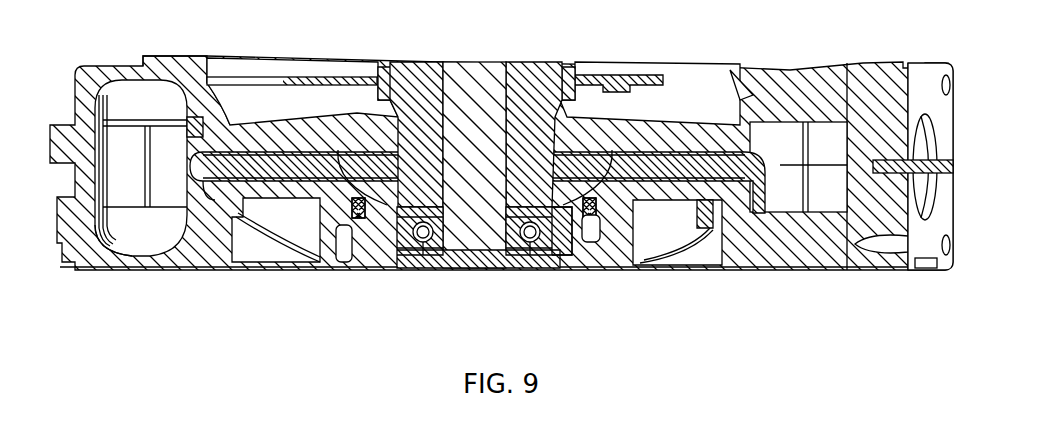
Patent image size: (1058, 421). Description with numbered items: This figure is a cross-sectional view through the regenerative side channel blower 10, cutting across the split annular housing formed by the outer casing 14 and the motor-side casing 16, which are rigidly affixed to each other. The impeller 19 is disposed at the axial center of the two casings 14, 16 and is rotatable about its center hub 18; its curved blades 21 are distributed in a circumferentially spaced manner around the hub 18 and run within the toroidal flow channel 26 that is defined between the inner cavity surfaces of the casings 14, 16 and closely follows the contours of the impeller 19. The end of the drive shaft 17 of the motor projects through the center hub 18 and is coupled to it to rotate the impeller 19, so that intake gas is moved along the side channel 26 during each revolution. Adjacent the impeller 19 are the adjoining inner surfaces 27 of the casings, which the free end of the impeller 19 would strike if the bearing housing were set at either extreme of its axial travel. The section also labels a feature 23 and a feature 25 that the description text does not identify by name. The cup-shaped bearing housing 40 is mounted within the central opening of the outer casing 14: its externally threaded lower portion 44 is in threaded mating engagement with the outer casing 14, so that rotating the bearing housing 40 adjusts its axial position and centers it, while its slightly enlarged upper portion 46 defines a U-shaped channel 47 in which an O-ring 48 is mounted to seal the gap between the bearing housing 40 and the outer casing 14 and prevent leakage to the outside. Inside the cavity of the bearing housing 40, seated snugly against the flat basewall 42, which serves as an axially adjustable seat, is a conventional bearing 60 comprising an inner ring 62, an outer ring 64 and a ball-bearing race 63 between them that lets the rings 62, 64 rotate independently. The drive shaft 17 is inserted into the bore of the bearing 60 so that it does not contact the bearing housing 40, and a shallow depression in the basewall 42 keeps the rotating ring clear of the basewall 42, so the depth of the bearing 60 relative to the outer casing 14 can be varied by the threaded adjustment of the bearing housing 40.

The regenerative side channel blower 10 is at (682, 292).
The outer casing 14 is at (83, 268).
The motor-side casing 16 is at (178, 75).
The drive shaft 17 is at (475, 95).
The center hub 18 is at (545, 130).
The impeller 19 is at (222, 132).
The curved blades 21 is at (120, 148).
The seal 23 is at (345, 225).
The wall 25 is at (206, 108).
The toroidal flow channel 26 is at (148, 240).
The adjoining inner surface 27 is at (195, 250).
The bearing housing 40 is at (384, 268).
The basewall 42 is at (537, 270).
The externally-helically-threaded lower portion 44 is at (342, 258).
The externally-channeled upper portion 46 is at (338, 150).
The U-shaped channel 47 is at (345, 182).
The O-ring 48 is at (345, 212).
The bearing 60 is at (492, 260).
The inner ring 62 is at (405, 263).
The ball-bearing race 63 is at (528, 268).
The outer ring 64 is at (437, 266).